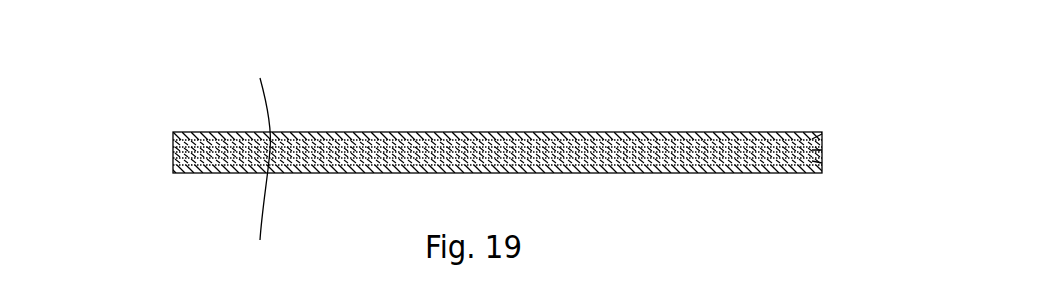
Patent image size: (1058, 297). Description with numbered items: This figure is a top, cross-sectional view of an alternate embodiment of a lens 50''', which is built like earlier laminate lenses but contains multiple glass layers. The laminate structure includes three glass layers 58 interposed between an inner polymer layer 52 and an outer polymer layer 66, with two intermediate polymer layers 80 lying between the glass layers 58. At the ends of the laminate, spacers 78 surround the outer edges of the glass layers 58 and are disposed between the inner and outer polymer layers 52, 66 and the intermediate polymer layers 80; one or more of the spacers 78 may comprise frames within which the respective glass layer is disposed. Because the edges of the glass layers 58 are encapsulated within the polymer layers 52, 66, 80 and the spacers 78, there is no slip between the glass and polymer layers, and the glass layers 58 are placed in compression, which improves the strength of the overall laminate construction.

The lens 50''' is at (515, 105).
The inner polymer layer 52 is at (210, 172).
The glass layers 58 is at (173, 150).
The outer polymer layer 66 is at (207, 135).
The spacers 78 is at (815, 163).
The intermediate polymer layers 80 is at (259, 160).